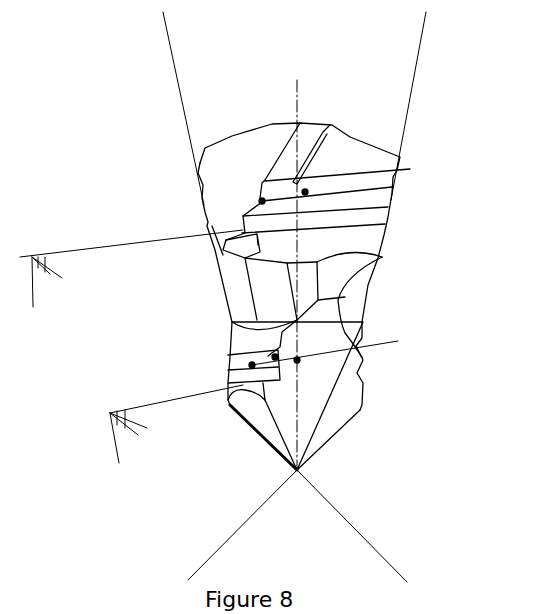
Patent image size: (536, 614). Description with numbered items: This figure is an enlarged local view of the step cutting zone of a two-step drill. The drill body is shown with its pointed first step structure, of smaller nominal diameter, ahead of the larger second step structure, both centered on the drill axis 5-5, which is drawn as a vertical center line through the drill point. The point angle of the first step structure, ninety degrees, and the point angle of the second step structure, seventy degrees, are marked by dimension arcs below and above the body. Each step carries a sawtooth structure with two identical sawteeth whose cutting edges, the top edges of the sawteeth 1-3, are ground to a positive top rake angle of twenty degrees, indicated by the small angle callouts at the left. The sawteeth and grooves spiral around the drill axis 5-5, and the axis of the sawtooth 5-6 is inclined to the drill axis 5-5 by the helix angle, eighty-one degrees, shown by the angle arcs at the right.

The top edges of the sawteeth 1-3 is at (262, 201).
The drill axis 5-5 is at (297, 360).
The axis of the sawtooth 5-6 is at (305, 192).